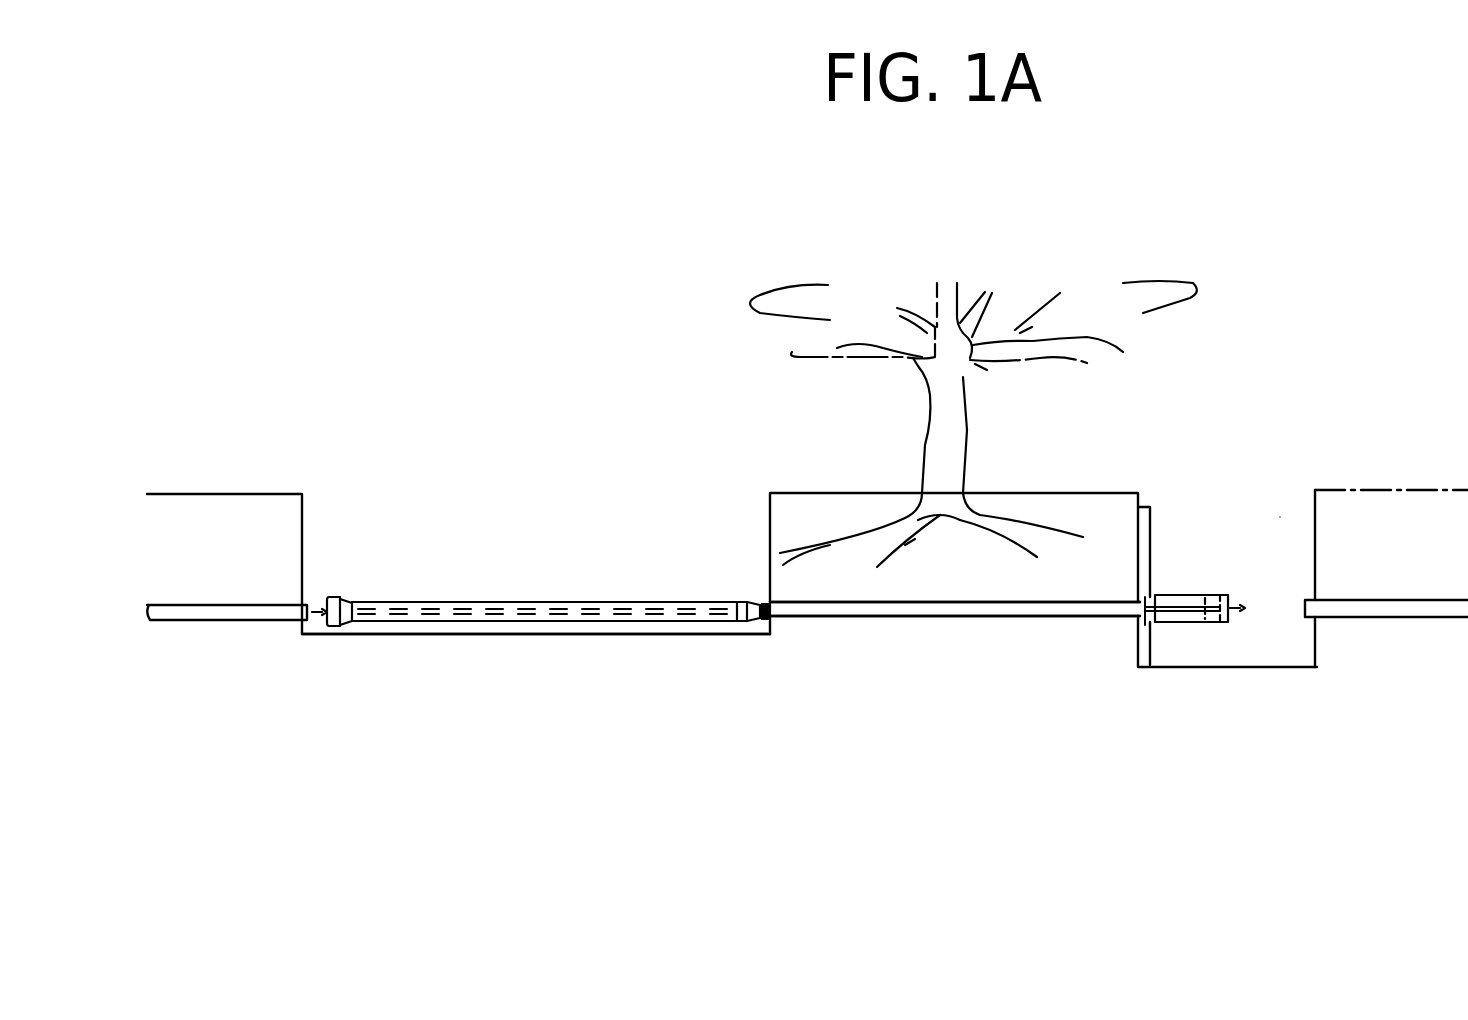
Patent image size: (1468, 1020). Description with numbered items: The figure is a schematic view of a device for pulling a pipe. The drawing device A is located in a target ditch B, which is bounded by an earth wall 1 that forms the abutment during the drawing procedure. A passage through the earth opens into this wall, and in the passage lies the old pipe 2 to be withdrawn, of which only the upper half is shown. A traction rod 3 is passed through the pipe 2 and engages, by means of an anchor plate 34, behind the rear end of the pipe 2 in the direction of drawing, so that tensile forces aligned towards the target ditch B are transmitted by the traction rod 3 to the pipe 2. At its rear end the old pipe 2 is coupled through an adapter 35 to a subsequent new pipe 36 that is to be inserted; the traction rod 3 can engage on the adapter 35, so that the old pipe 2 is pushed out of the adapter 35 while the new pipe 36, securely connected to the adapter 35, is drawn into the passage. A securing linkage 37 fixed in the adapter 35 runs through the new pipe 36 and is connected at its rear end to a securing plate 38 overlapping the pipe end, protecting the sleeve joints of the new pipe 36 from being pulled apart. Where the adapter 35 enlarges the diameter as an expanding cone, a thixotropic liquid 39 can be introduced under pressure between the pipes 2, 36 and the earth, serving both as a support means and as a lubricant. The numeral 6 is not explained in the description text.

The earth wall 1 is at (1122, 507).
The pipe 2 is at (216, 617).
The traction rod 3 is at (1167, 607).
The inner wall 6 is at (1147, 510).
The drawing device A is at (1190, 598).
The target ditch B is at (1280, 517).
The anchor plate 34 is at (758, 622).
The adapter 35 is at (758, 608).
The subsequent pipe 36 is at (592, 625).
The securing linkage 37 is at (557, 612).
The securing plate 38 is at (340, 598).
The thixotropic liquid 39 is at (833, 620).